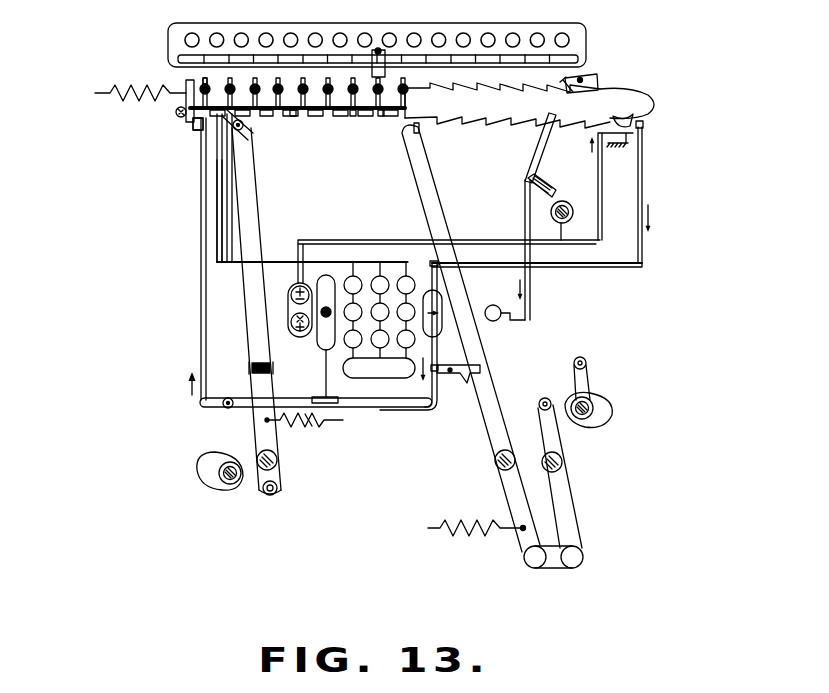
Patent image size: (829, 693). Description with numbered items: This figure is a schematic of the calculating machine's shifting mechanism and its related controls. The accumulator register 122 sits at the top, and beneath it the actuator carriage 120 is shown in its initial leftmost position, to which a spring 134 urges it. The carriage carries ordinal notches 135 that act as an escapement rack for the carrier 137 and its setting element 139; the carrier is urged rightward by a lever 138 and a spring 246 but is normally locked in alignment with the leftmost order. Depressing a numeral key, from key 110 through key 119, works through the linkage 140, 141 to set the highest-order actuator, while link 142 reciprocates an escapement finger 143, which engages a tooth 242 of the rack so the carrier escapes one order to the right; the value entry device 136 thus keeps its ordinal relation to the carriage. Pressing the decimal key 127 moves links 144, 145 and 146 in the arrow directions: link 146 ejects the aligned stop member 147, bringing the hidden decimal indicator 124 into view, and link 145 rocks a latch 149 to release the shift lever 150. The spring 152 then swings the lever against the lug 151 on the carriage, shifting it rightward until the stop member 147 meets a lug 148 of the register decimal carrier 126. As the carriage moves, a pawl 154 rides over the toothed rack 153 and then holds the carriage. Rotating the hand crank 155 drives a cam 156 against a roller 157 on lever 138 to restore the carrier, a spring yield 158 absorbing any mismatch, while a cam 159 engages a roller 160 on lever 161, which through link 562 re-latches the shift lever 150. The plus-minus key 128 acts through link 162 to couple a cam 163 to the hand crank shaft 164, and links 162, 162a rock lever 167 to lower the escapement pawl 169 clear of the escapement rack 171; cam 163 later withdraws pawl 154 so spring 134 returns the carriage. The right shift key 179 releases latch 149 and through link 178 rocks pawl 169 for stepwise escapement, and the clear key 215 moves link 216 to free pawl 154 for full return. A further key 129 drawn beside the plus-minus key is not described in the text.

The numeral key 110 is at (401, 372).
The numeral key 119 is at (412, 277).
The actuator carriage 120 is at (337, 118).
The accumulator register 122 is at (162, 40).
The decimal indicator 124 is at (310, 113).
The register decimal carrier 126 is at (380, 50).
The decimal key 127 is at (321, 340).
The plus-minus key 128 is at (291, 297).
The multiply/plus key 129 is at (298, 331).
The spring 134 is at (132, 98).
The ordinal notches 135 is at (381, 116).
The value entry device 136 is at (174, 145).
The carrier 137 is at (197, 131).
The lever 138 is at (247, 205).
The setting element 139 is at (216, 140).
The linkage 140 is at (273, 260).
The linkage 141 is at (217, 216).
The link 142 is at (227, 240).
The escapement finger 143 is at (242, 116).
The link 144 is at (330, 380).
The link 145 is at (341, 420).
The link 146 is at (200, 312).
The stop member 147 is at (203, 82).
The lug 148 is at (405, 68).
The latch 149 is at (481, 368).
The shift lever 150 is at (424, 188).
The lug 151 is at (420, 130).
The spring 152 is at (480, 526).
The toothed rack 153 is at (523, 88).
The pawl 154 is at (598, 82).
The hand crank 155 is at (587, 378).
The cam 156 is at (206, 458).
The roller 157 is at (278, 490).
The spring yield 158 is at (258, 362).
The cam 159 is at (605, 409).
The roller 160 is at (541, 404).
The lever 161 is at (547, 434).
The link 162 is at (358, 240).
The link 162a is at (600, 216).
The cam 163 is at (570, 202).
The hand crank shaft 164 is at (549, 212).
The lever 167 is at (597, 132).
The escapement pawl 169 is at (633, 121).
The escapement rack 171 is at (636, 107).
The link 178 is at (643, 251).
The right shift key 179 is at (444, 325).
The clear key 215 is at (498, 282).
The link 216 is at (532, 290).
The tooth 242 is at (292, 118).
The spring 246 is at (316, 428).
The link 562 is at (556, 567).